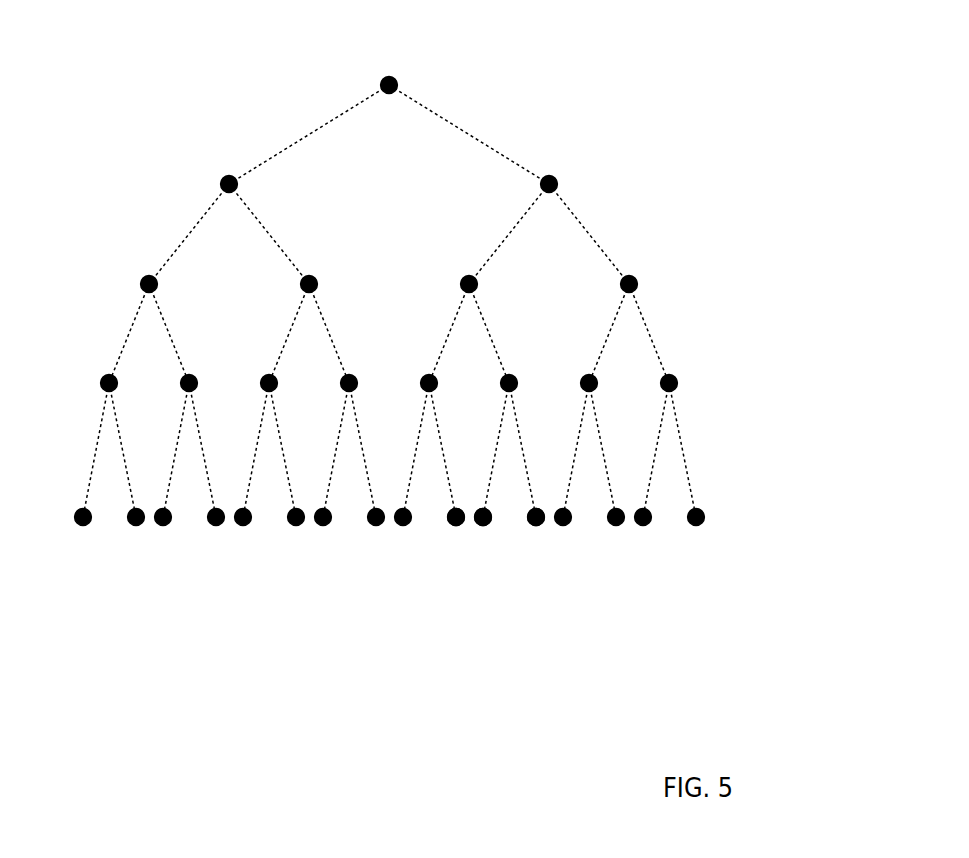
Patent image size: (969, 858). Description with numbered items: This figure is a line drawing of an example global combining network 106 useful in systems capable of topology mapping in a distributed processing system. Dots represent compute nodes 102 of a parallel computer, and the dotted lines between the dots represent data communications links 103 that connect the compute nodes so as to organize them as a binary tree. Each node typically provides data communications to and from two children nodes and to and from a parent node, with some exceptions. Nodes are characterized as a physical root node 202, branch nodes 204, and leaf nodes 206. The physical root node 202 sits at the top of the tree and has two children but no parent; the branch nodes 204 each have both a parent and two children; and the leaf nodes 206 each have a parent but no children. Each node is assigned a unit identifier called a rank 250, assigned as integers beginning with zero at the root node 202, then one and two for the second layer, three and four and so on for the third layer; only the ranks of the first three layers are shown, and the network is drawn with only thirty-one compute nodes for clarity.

The compute nodes 102 is at (457, 525).
The data communications links 103 is at (317, 130).
The global combining network 106 is at (255, 726).
The physical root node 202 is at (507, 61).
The branch nodes 204 is at (716, 140).
The leaf nodes 206 is at (717, 548).
The rank 250 is at (503, 196).